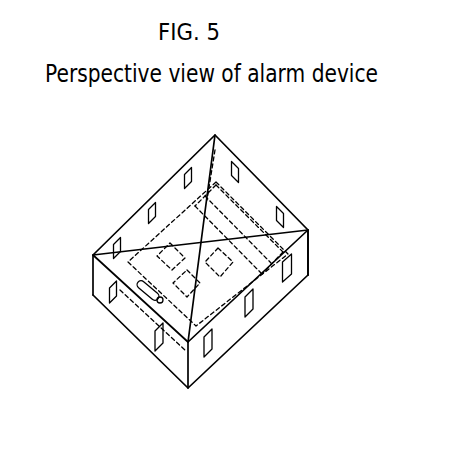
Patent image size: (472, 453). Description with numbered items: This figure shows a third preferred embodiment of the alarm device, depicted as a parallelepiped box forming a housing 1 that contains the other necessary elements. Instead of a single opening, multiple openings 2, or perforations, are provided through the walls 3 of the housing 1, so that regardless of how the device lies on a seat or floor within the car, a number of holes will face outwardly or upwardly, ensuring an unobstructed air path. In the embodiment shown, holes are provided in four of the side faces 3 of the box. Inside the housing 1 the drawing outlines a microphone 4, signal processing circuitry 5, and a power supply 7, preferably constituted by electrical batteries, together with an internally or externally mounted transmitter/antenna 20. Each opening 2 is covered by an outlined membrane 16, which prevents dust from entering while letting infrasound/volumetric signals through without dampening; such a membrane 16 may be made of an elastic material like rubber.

The housing 1 is at (127, 327).
The openings 2 is at (346, 255).
The walls 3 is at (311, 360).
The microphone 4 is at (138, 282).
The signal processing circuitry 5 is at (109, 233).
The power supply 7 is at (254, 250).
The membrane 16 is at (357, 279).
The transmitter/antenna 20 is at (147, 337).